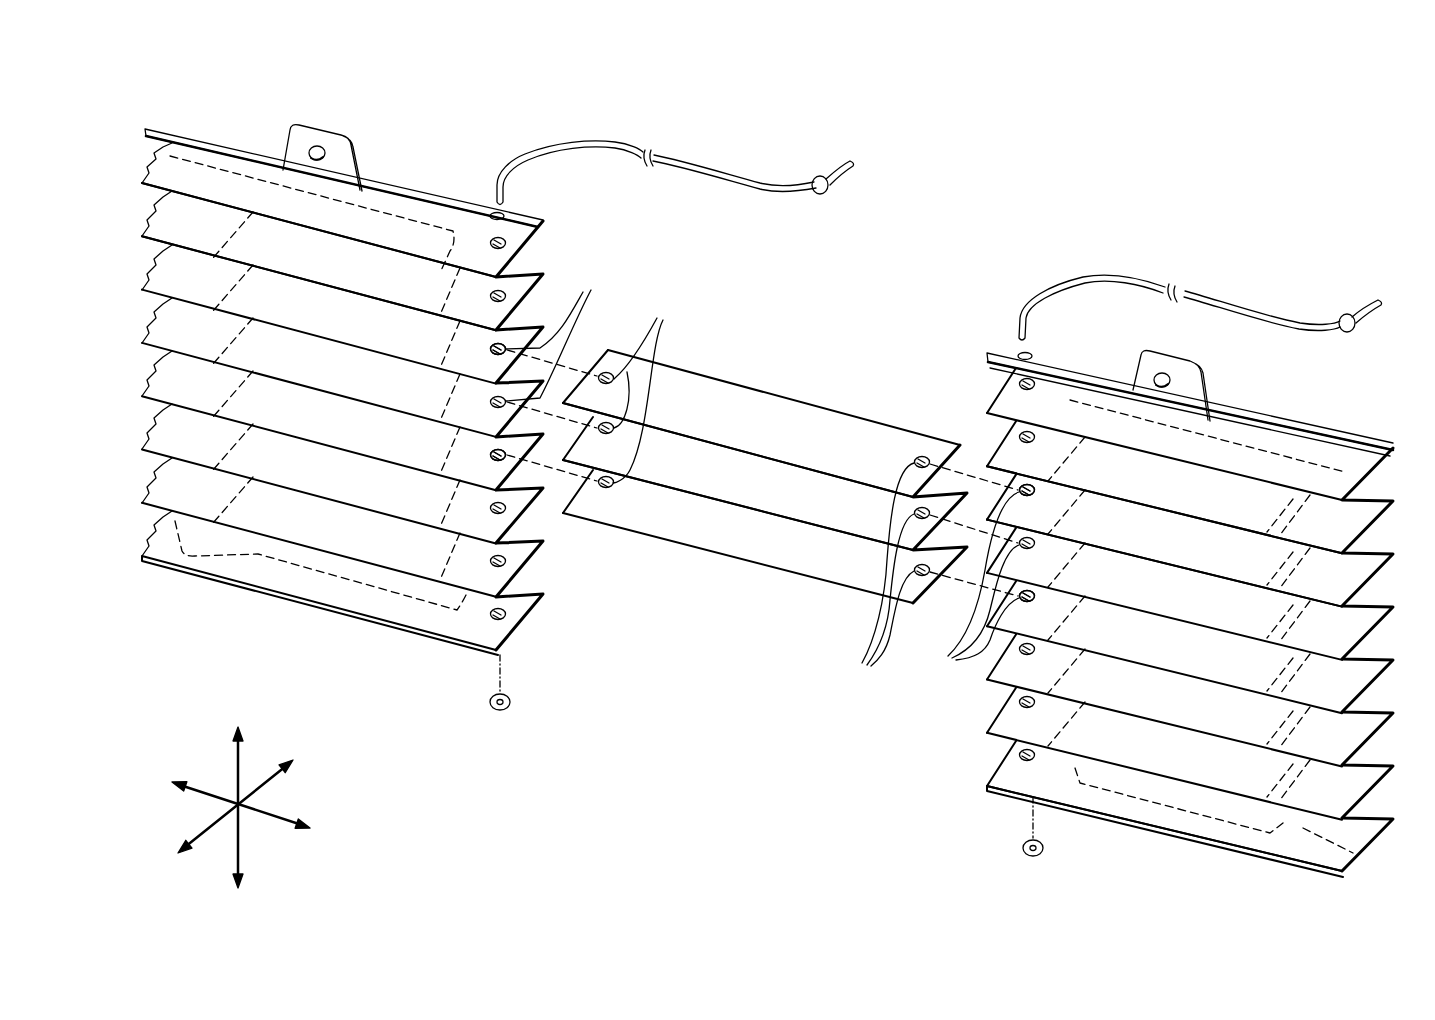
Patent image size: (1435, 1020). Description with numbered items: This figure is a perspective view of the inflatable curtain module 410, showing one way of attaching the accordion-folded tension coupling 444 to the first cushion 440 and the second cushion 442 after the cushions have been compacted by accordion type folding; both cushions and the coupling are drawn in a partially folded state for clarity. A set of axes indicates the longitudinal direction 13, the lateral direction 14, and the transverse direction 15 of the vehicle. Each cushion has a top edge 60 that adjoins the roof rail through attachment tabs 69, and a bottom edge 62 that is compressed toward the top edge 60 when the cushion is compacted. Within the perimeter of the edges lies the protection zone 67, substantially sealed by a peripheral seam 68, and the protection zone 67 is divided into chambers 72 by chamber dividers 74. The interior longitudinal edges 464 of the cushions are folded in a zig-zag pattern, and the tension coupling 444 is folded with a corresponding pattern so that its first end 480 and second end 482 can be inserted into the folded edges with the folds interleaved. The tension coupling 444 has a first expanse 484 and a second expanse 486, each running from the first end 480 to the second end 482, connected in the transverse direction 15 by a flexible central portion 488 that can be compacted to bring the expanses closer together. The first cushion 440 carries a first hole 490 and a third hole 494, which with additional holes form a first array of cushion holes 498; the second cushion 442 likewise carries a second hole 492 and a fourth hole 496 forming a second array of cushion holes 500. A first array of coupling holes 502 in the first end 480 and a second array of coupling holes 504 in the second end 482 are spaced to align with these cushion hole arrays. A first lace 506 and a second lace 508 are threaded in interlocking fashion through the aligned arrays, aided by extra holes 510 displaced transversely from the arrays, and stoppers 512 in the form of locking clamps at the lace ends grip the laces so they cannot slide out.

The longitudinal direction 13 is at (288, 820).
The lateral direction 14 is at (204, 835).
The transverse direction 15 is at (236, 753).
The top edge 60 is at (214, 140).
The bottom edge 62 is at (340, 598).
The protection zone 67 is at (742, 395).
The peripheral seam 68 is at (280, 565).
The attachment tabs 69 is at (320, 148).
The chambers 72 is at (767, 527).
The chamber dividers 74 is at (230, 447).
The inflatable curtain module 410 is at (1143, 215).
The first cushion 440 is at (408, 168).
The second cushion 442 is at (1357, 392).
The tension coupling 444 is at (832, 343).
The interior longitudinal edges 464 is at (985, 779).
The first end 480 is at (597, 525).
The second end 482 is at (943, 405).
The first expanse 484 is at (697, 407).
The second expanse 486 is at (712, 535).
The flexible central portion 488 is at (780, 480).
The first hole 490 is at (490, 348).
The second hole 492 is at (1035, 492).
The third hole 494 is at (490, 456).
The fourth hole 496 is at (1035, 600).
The first array of cushion holes 498 is at (564, 336).
The second array of cushion holes 500 is at (965, 581).
The first array of coupling holes 502 is at (655, 391).
The second array of coupling holes 504 is at (868, 567).
The first lace 506 is at (673, 158).
The second lace 508 is at (1197, 296).
The extra holes 510 is at (504, 216).
The stoppers 512 is at (818, 176).